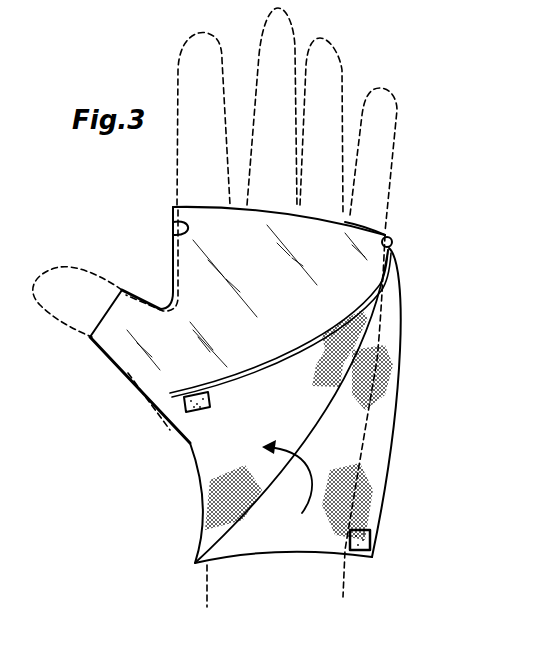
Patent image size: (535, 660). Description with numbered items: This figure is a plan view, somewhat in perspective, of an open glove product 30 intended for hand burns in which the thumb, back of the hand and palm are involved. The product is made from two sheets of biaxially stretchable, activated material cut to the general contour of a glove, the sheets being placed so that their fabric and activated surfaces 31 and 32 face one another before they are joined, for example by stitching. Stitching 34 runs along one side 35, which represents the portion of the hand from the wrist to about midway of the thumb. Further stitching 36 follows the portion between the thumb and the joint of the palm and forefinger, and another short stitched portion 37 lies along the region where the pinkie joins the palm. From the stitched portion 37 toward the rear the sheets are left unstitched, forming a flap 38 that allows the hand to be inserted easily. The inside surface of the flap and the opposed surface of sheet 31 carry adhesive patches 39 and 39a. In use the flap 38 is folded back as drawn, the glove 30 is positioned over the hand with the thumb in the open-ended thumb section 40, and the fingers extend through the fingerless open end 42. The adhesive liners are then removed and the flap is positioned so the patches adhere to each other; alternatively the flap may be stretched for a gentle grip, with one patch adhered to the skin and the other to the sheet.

The open glove product 30 is at (432, 355).
The activated surface 31 is at (360, 484).
The activated surface 32 is at (270, 382).
The stitching 34 is at (123, 353).
The side 35 is at (157, 387).
The stitching 36 is at (173, 225).
The stitched portion 37 is at (393, 240).
The flap 38 is at (372, 297).
The adhesive patch 39 is at (372, 537).
The adhesive patch 39a is at (183, 405).
The thumb section 40 is at (100, 312).
The open end 42 is at (358, 226).